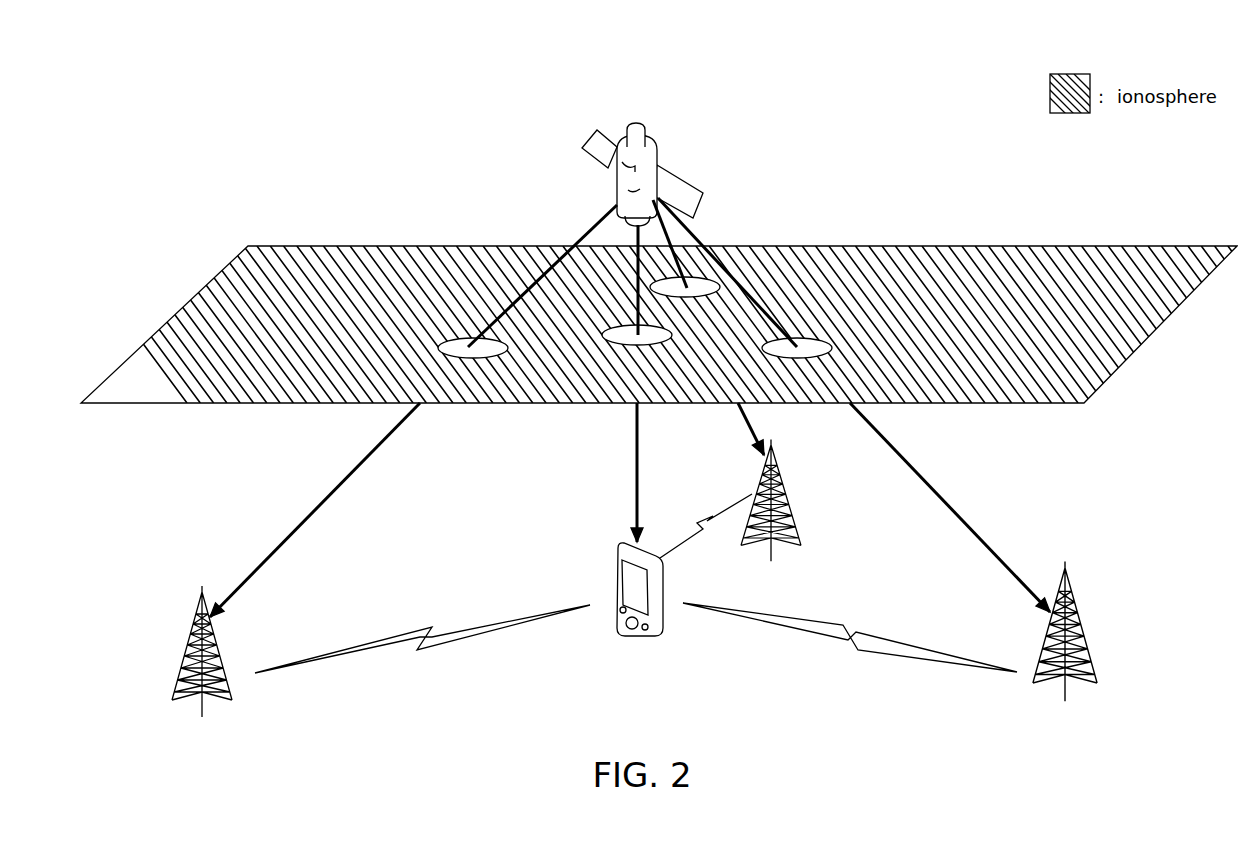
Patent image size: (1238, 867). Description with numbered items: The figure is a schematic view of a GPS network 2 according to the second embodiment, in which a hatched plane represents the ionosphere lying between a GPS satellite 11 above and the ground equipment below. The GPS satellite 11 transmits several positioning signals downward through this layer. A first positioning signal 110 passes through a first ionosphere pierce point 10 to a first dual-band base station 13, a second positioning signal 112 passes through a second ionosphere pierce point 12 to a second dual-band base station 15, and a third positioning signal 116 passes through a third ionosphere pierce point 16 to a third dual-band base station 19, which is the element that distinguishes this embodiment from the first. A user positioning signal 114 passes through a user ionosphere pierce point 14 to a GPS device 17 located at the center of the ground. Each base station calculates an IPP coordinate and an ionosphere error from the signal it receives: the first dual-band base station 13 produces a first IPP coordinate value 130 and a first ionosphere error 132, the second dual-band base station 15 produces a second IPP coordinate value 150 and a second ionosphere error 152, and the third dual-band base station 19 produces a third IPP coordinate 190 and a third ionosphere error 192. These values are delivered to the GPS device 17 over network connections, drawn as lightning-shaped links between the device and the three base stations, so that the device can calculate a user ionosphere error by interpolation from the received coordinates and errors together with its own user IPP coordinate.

The GPS network 2 is at (268, 160).
The first ionosphere pierce point 10 is at (472, 337).
The GPS satellite 11 is at (703, 198).
The second ionosphere pierce point 12 is at (797, 338).
The first dual-band base station 13 is at (190, 655).
The user ionosphere pierce point 14 is at (602, 336).
The second dual-band base station 15 is at (1075, 630).
The third ionosphere pierce point 16 is at (720, 288).
The GPS device 17 is at (663, 608).
The third dual-band base station 19 is at (783, 493).
The first positioning signal 110 is at (357, 503).
The second positioning signal 112 is at (913, 512).
The user positioning signal 114 is at (657, 530).
The third positioning signal 116 is at (763, 417).
The first IPP coordinate value 130 is at (422, 655).
The first ionosphere error 132 is at (502, 608).
The second IPP coordinate value 150 is at (850, 624).
The second ionosphere error 152 is at (773, 607).
The third IPP coordinate 190 is at (698, 506).
The third ionosphere error 192 is at (712, 517).